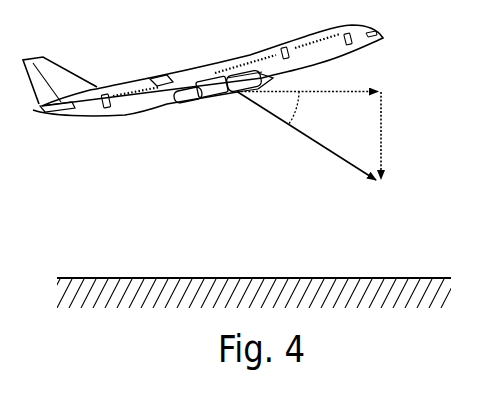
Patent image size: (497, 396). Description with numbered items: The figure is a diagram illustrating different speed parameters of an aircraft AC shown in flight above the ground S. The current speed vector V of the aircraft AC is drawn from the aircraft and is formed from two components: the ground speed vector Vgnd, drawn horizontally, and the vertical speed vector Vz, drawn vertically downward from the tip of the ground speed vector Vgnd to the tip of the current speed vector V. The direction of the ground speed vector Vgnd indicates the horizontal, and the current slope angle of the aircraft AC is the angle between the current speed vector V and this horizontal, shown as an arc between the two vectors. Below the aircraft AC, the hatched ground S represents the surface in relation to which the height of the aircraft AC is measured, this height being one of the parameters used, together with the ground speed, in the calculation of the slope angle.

The aircraft AC is at (148, 117).
The ground S is at (92, 277).
The current speed vector V is at (345, 181).
The ground speed vector Vgnd is at (369, 68).
The vertical speed vector Vz is at (398, 127).